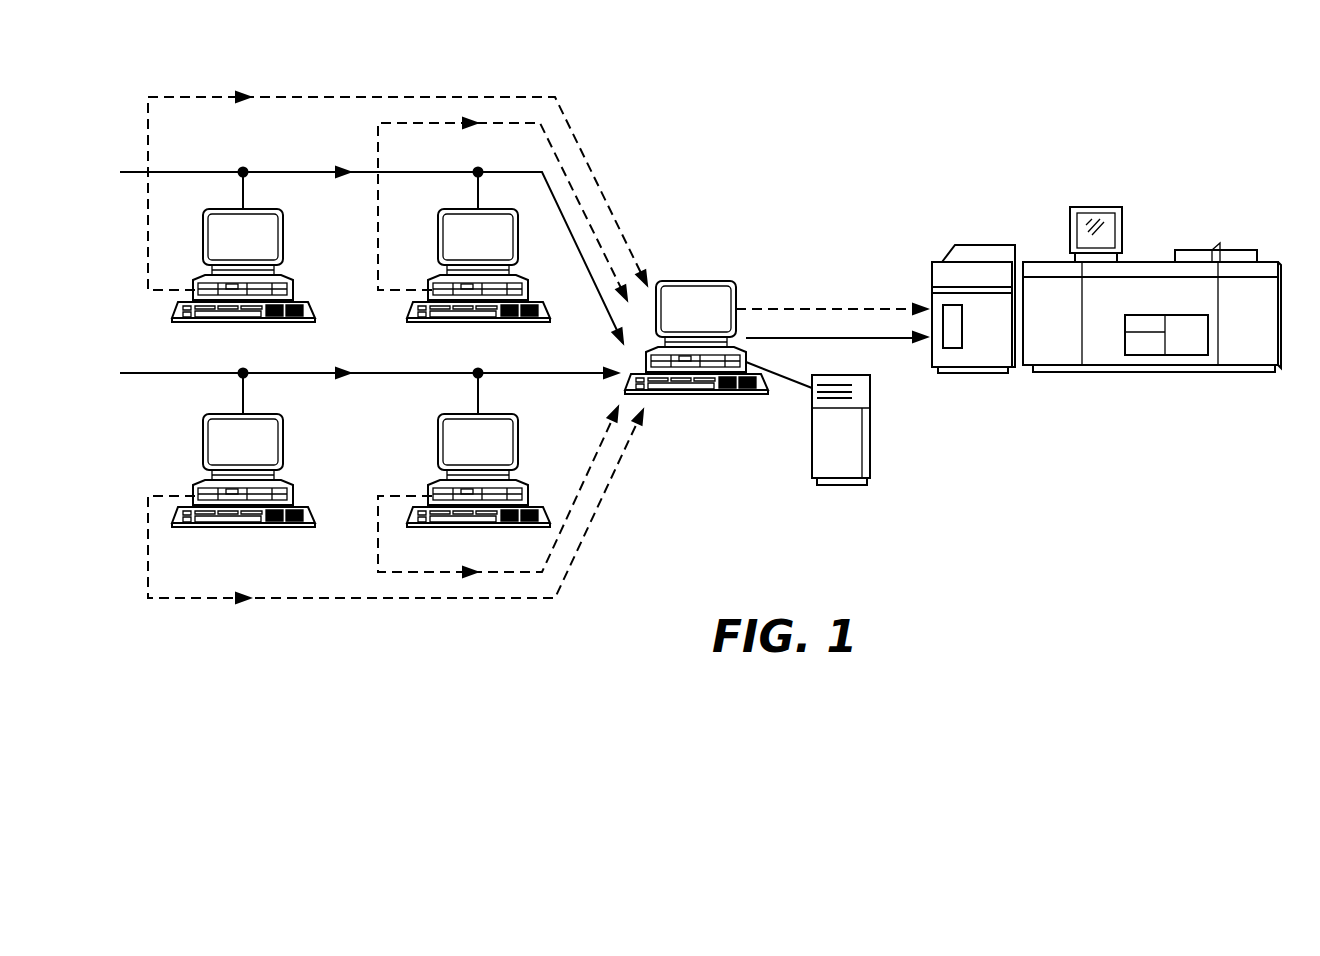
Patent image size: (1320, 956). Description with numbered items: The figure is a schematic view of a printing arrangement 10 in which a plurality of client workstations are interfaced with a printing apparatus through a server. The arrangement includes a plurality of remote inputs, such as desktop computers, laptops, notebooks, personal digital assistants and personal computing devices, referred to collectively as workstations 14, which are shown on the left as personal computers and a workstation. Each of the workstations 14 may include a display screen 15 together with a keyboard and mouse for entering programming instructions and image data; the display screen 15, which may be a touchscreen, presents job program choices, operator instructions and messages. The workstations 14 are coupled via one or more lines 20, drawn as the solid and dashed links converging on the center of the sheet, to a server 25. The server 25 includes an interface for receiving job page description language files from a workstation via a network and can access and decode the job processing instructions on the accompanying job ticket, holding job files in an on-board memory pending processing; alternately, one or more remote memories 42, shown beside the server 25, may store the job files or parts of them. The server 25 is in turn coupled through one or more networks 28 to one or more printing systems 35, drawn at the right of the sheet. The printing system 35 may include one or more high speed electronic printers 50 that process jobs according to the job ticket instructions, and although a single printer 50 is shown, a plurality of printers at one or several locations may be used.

The printing arrangement 10 is at (690, 150).
The workstations 14 is at (403, 262).
The display screen 15 is at (518, 240).
The lines 20 is at (592, 370).
The server 25 is at (695, 281).
The networks 28 is at (883, 340).
The printing system 35 is at (1173, 205).
The remote memories 42 is at (812, 440).
The high speed electronic printer 50 is at (1103, 358).